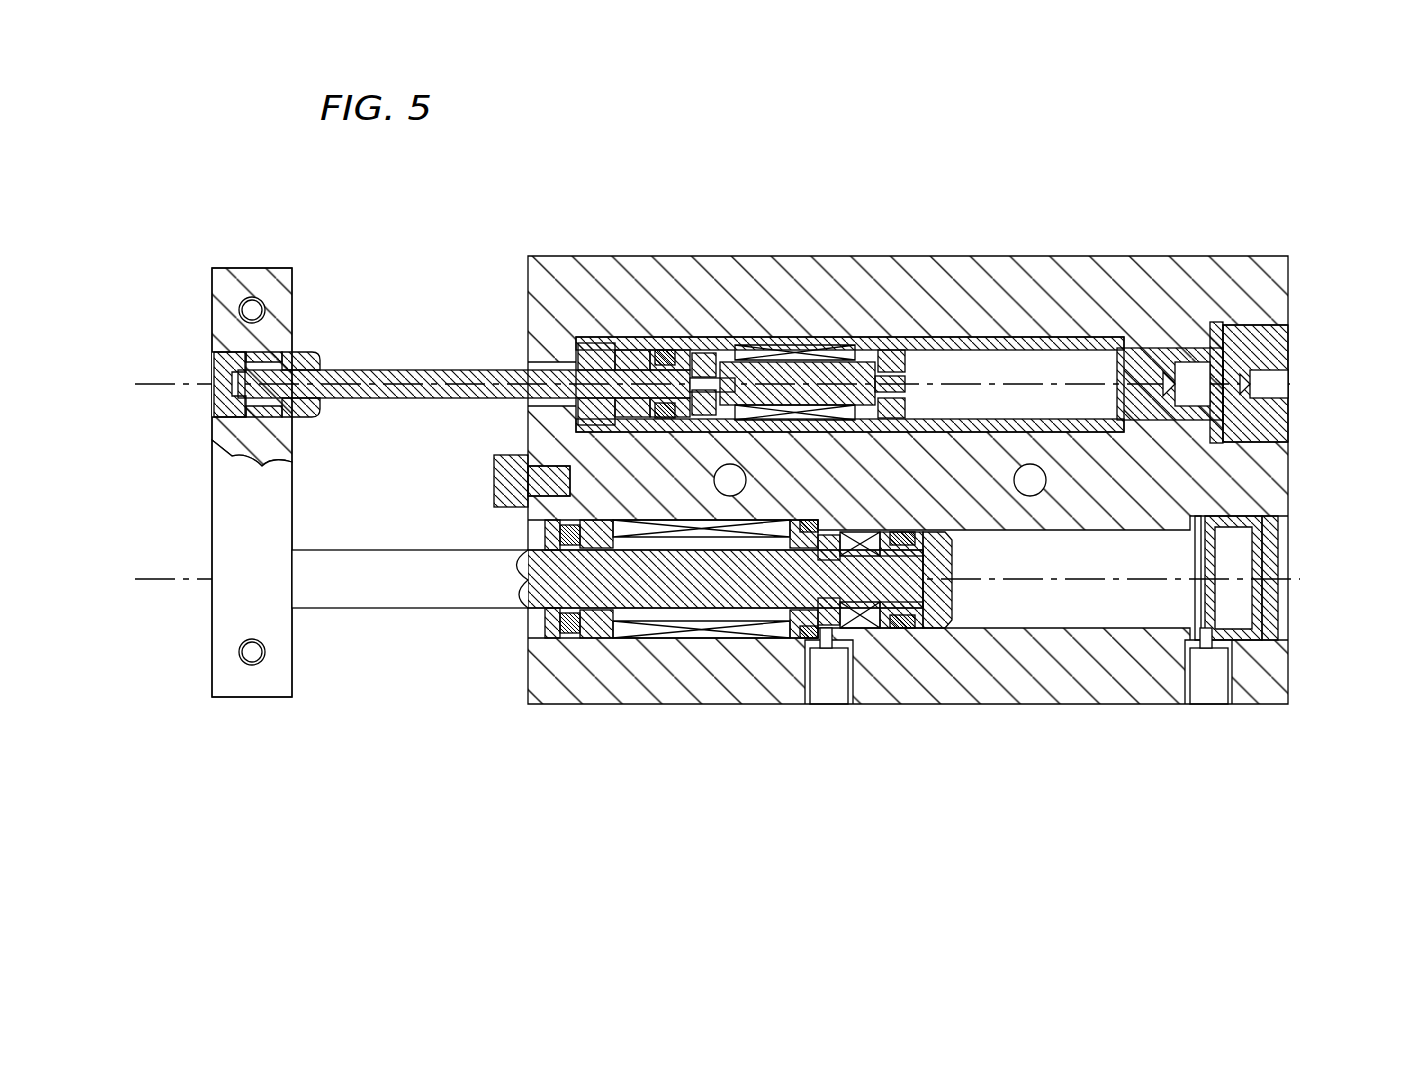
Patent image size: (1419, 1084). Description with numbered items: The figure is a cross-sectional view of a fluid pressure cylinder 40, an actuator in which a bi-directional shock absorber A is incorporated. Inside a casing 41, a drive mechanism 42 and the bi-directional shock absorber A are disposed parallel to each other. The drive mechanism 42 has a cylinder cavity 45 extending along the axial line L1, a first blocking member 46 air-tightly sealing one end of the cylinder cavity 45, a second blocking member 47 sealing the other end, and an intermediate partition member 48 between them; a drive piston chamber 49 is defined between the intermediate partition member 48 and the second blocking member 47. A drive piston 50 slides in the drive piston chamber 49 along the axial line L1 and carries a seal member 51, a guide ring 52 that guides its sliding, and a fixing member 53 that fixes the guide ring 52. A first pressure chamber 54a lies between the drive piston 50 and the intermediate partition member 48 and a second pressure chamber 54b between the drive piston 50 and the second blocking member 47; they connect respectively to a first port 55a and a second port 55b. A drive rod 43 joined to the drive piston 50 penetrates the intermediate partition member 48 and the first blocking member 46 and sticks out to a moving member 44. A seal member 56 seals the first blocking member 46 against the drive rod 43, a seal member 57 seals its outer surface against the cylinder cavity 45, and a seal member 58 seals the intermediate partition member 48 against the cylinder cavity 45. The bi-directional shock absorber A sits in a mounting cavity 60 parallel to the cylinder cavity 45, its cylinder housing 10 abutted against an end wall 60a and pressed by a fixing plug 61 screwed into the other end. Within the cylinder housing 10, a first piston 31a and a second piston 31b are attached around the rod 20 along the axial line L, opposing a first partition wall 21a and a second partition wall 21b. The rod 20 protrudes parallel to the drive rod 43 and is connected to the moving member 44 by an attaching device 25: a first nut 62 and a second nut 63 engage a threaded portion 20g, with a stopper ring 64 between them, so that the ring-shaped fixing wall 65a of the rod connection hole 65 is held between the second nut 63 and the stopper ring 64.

The cylinder housing 10 is at (1106, 343).
The bi-directional shock absorber A is at (1052, 312).
The axial line L is at (1290, 384).
The axial line L1 is at (1300, 579).
The moving member 44 is at (220, 540).
The threaded portion 20g is at (262, 375).
The second nut 63 is at (220, 370).
The rod connection hole 65 is at (225, 400).
The fixing wall 65a is at (230, 450).
The rod 20 is at (432, 370).
The first nut 62 is at (320, 360).
The stopper ring 64 is at (318, 405).
The attaching device 25 is at (313, 328).
The mounting cavity 60 is at (965, 340).
The end wall 60a is at (580, 342).
The first piston 31a is at (672, 348).
The first partition wall 21a is at (716, 348).
The second partition wall 21b is at (868, 348).
The second piston 31b is at (888, 348).
The fixing plug 61 is at (1262, 345).
The drive rod 43 is at (396, 598).
The seal member 51 is at (935, 532).
The drive piston 50 is at (950, 630).
The guide ring 52 is at (862, 532).
The fixing member 53 is at (828, 535).
The seal member 58 is at (806, 520).
The intermediate partition member 48 is at (798, 640).
The cylinder cavity 45 is at (680, 640).
The first blocking member 46 is at (598, 640).
The seal member 57 is at (570, 640).
The seal member 56 is at (552, 626).
The second blocking member 47 is at (1232, 560).
The drive piston chamber 49 is at (1090, 535).
The first port 55a is at (838, 690).
The first pressure chamber 54a is at (824, 640).
The second port 55b is at (1208, 690).
The second pressure chamber 54b is at (1090, 605).
The casing 41 is at (1037, 685).
The drive mechanism 42 is at (885, 655).
The fluid pressure cylinder 40 is at (1180, 818).